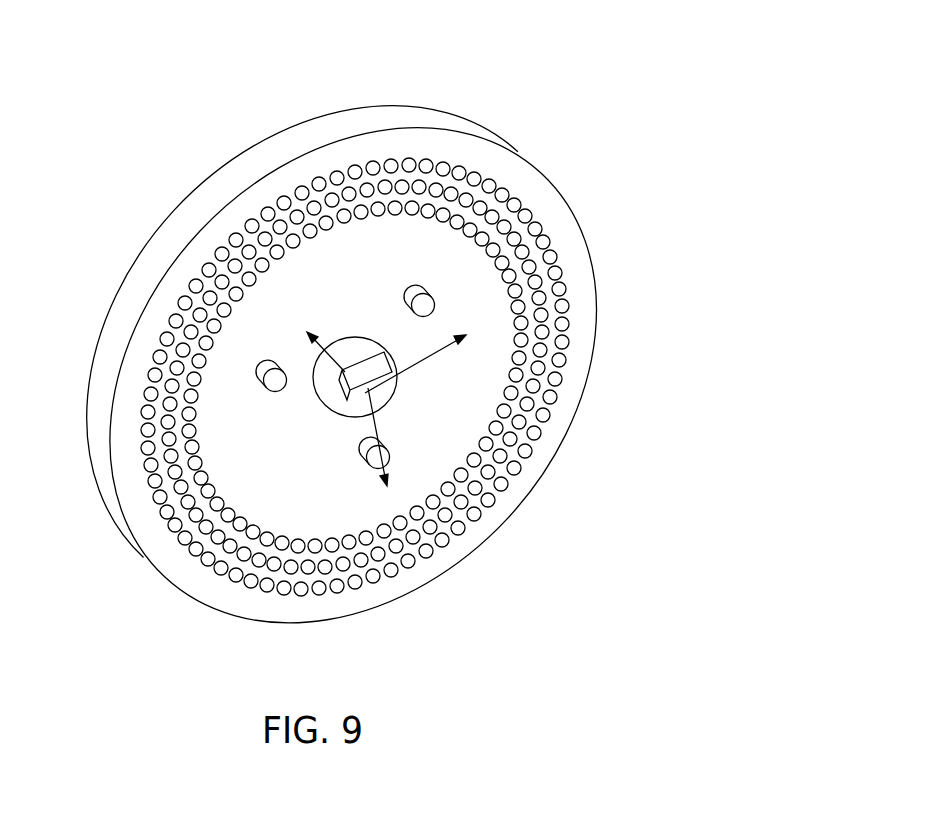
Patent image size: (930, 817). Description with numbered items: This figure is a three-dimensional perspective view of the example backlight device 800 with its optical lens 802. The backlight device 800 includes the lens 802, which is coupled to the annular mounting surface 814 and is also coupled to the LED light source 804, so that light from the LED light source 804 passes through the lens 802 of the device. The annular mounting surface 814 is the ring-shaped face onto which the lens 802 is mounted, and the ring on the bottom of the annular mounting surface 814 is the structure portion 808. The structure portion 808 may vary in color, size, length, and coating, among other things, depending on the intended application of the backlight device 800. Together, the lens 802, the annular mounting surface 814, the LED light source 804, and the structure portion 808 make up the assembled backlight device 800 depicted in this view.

The backlight device 800 is at (591, 37).
The optical lens 802 is at (156, 253).
The LED light source 804 is at (343, 413).
The structure portion 808 is at (527, 456).
The annular mounting surface 814 is at (573, 362).